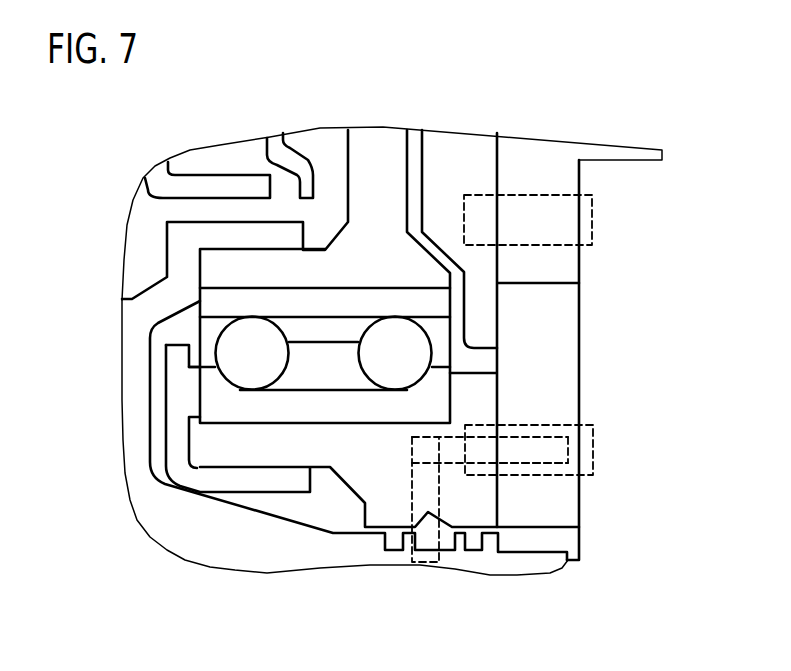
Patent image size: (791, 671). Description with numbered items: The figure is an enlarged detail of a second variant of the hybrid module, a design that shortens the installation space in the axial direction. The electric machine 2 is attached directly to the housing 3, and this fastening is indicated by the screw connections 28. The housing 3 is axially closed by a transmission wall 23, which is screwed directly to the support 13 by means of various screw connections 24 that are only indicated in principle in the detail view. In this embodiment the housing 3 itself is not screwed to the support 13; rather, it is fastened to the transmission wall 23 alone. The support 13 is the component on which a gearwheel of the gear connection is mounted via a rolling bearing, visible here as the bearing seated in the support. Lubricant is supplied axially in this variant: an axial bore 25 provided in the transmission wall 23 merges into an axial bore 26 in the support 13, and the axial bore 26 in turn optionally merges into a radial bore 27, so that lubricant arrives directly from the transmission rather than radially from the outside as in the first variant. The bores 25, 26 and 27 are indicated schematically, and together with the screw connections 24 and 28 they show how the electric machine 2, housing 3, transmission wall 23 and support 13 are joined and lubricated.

The electric machine 2 is at (545, 108).
The housing 3 is at (460, 150).
The support 13 is at (360, 468).
The transmission wall 23 is at (542, 347).
The screw connections 24 is at (550, 423).
The axial bore 25 is at (570, 447).
The axial bore 26 is at (483, 437).
The radial bore 27 is at (436, 437).
The screw connections 28 is at (563, 245).